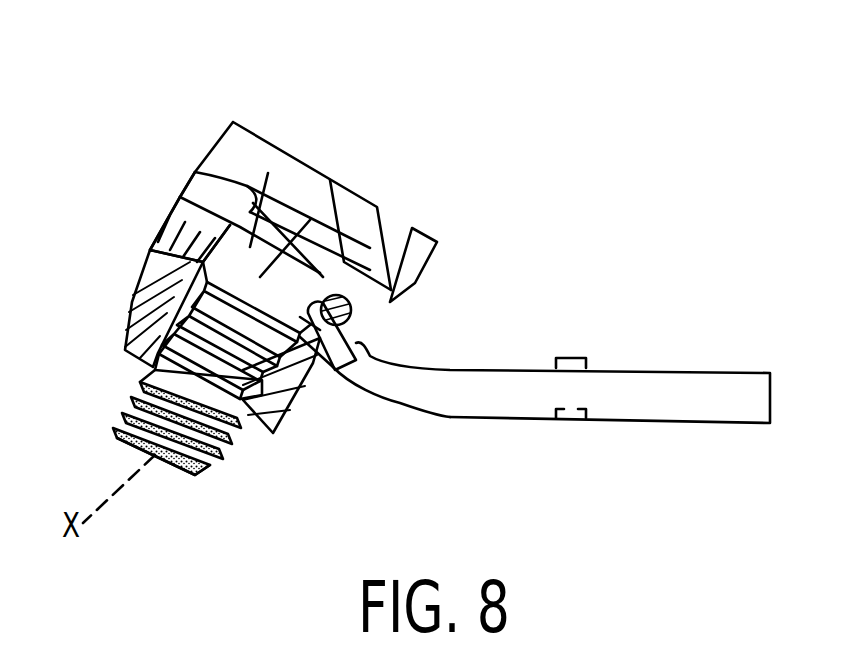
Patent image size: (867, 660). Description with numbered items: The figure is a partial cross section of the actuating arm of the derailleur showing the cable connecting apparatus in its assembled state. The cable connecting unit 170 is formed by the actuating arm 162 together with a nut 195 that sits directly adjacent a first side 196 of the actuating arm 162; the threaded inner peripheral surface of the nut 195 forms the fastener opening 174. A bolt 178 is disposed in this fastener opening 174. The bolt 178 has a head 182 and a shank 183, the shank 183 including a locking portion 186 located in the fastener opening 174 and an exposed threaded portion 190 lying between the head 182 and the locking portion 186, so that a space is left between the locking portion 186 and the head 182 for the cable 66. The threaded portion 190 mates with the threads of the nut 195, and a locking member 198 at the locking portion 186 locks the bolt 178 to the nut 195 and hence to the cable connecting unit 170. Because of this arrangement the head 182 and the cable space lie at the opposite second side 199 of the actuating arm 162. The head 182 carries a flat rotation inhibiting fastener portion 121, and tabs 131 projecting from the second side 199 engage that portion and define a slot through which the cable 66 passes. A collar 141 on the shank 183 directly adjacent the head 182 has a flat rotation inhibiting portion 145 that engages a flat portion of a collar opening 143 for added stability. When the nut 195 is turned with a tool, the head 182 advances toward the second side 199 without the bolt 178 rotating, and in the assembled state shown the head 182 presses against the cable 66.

The bolt 178 is at (237, 100).
The second side 199 is at (187, 212).
The flat rotation inhibiting portion 145 is at (243, 181).
The rotation inhibiting fastener portion 121 is at (296, 243).
The head 182 is at (342, 225).
The collar 141 is at (330, 270).
The tabs 131 is at (425, 246).
The collar opening 143 is at (353, 310).
The cable 66 is at (374, 346).
The actuating arm 162 is at (660, 380).
The first side 196 is at (373, 397).
The nut 195 is at (125, 306).
The cable connecting unit 170 is at (94, 350).
The fastener opening 174 is at (268, 433).
The threaded portion 190 is at (303, 382).
The shank 183 is at (120, 393).
The locking portion 186 is at (128, 436).
The locking member 198 is at (210, 457).